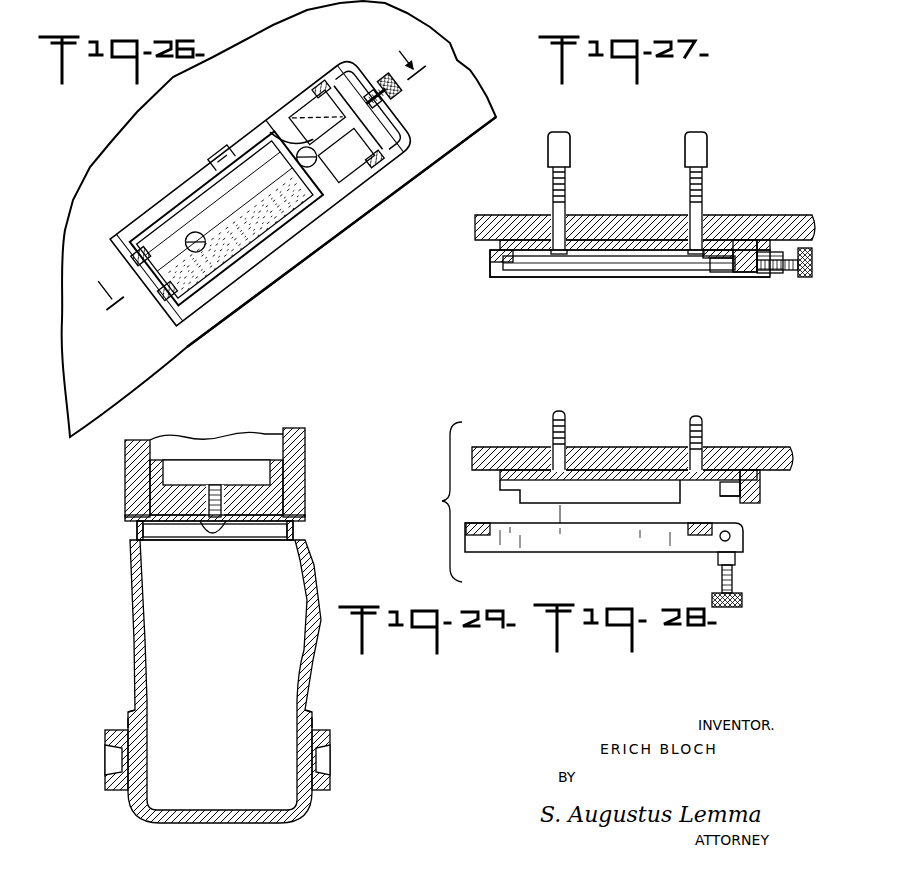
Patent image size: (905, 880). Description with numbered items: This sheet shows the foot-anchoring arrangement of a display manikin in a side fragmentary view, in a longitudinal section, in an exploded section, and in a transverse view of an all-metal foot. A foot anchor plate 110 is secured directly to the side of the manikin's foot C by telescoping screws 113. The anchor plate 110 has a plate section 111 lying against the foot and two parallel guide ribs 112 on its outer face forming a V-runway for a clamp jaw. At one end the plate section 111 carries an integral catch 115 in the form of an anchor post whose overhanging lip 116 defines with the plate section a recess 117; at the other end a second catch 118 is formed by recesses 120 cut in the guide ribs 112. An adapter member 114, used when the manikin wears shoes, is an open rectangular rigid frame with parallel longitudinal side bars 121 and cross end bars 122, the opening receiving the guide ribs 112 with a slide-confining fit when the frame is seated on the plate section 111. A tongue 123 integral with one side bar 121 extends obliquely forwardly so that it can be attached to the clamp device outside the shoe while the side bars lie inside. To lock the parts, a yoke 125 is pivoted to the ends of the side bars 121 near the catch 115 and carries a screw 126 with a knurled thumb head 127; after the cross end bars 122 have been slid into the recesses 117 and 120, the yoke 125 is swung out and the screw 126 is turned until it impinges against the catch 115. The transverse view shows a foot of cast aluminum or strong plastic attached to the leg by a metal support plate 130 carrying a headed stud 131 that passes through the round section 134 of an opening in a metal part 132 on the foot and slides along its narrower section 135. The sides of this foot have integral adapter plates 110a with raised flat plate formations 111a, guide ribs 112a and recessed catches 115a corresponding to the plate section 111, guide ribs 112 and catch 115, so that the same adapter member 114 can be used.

In FIG. 26, the foot anchor plate 110 is at (320, 172).
In FIG. 27, the foot anchor plate 110 is at (640, 276).
In FIG. 28, the foot anchor plate 110 is at (495, 495).
In FIG. 26, the plate section 111 is at (280, 120).
In FIG. 27, the plate section 111 is at (648, 228).
In FIG. 28, the plate section 111 is at (645, 458).
In FIG. 26, the guide ribs 112 is at (185, 210).
In FIG. 27, the guide ribs 112 is at (575, 268).
In FIG. 28, the guide ribs 112 is at (558, 526).
In FIG. 26, the telescoping screws 113 is at (300, 150).
In FIG. 27, the telescoping screws 113 is at (567, 192).
In FIG. 28, the telescoping screws 113 is at (567, 420).
In FIG. 26, the adapter member 114 is at (372, 206).
In FIG. 27, the adapter member 114 is at (488, 278).
In FIG. 28, the adapter member 114 is at (500, 556).
In FIG. 26, the catch 115 is at (346, 77).
In FIG. 27, the catch 115 is at (745, 274).
In FIG. 28, the catch 115 is at (745, 492).
In FIG. 26, the overhanging lip 116 is at (284, 136).
In FIG. 27, the overhanging lip 116 is at (718, 273).
In FIG. 28, the overhanging lip 116 is at (738, 498).
In FIG. 27, the recess 117 is at (744, 245).
In FIG. 28, the recess 117 is at (745, 470).
In FIG. 26, the catch 118 is at (143, 266).
In FIG. 27, the catch 118 is at (492, 270).
In FIG. 28, the catch 118 is at (500, 498).
In FIG. 27, the recesses 120 is at (512, 245).
In FIG. 28, the recesses 120 is at (512, 475).
In FIG. 26, the side bars 121 is at (120, 238).
In FIG. 27, the side bars 121 is at (540, 272).
In FIG. 28, the side bars 121 is at (628, 554).
In FIG. 26, the cross end bars 122 is at (376, 157).
In FIG. 27, the cross end bars 122 is at (490, 256).
In FIG. 28, the cross end bars 122 is at (698, 536).
In FIG. 26, the tongue 123 is at (218, 158).
In FIG. 26, the yoke 125 is at (377, 72).
In FIG. 27, the yoke 125 is at (790, 258).
In FIG. 28, the yoke 125 is at (736, 572).
In FIG. 26, the screw 126 is at (376, 100).
In FIG. 27, the screw 126 is at (770, 262).
In FIG. 28, the screw 126 is at (736, 578).
In FIG. 26, the knurled thumb head 127 is at (397, 85).
In FIG. 27, the knurled thumb head 127 is at (810, 280).
In FIG. 28, the knurled thumb head 127 is at (732, 608).
In FIG. 29, the metal support plate 130 is at (270, 498).
In FIG. 29, the headed stud 131 is at (222, 535).
In FIG. 29, the metal part 132 is at (125, 520).
In FIG. 29, the round section 134 is at (180, 528).
In FIG. 29, the narrower section 135 is at (210, 526).
In FIG. 29, the adapter plates 110a is at (128, 714).
In FIG. 29, the raised flat plate formations 111a is at (126, 722).
In FIG. 29, the guide ribs 112a is at (106, 732).
In FIG. 29, the recessed catches 115a is at (105, 760).
In FIG. 26, the manikin's foot C is at (190, 350).
In FIG. 27, the manikin's foot C is at (475, 228).
In FIG. 28, the manikin's foot C is at (785, 450).
In FIG. 29, the manikin's foot C is at (130, 605).